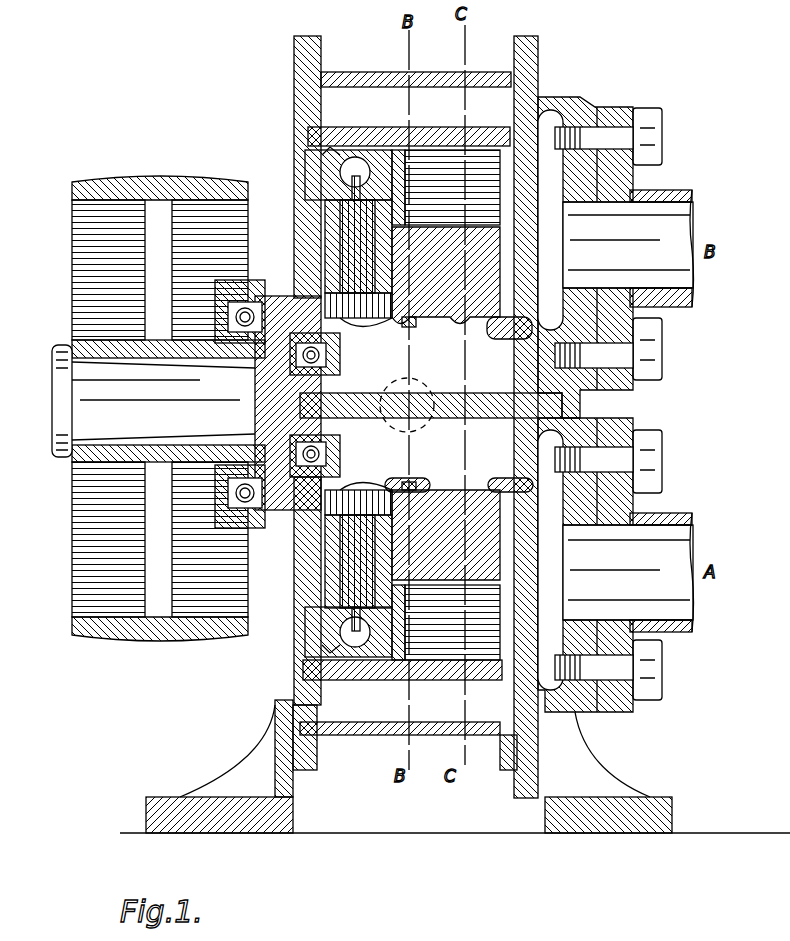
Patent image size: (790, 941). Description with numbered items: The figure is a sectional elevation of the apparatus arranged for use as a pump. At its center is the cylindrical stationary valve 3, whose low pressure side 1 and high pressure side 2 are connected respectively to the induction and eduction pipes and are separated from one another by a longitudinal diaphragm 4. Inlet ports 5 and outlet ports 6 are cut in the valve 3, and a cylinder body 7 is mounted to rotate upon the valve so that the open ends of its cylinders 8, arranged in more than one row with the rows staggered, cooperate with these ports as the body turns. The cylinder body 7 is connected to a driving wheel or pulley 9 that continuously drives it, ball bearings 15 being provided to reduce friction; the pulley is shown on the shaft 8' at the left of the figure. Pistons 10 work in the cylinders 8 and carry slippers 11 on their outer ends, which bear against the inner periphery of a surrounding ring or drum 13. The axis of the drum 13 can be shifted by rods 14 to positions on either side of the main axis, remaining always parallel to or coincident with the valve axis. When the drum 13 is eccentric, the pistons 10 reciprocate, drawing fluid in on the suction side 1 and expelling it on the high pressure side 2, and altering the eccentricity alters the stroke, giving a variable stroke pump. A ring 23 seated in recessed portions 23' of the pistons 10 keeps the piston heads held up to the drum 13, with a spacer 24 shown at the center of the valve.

The low pressure side 1 is at (486, 470).
The high pressure side 2 is at (545, 352).
The central cylindrical stationary valve 3 is at (500, 332).
The longitudinal diaphragm 4 is at (510, 395).
The inlet ports 5 is at (398, 482).
The outlet ports 6 is at (376, 322).
The cylinder body 7 is at (500, 256).
The cylinders 8 is at (358, 404).
The drive shaft 8' is at (169, 403).
The driving wheel or pulley 9 is at (72, 598).
The pistons 10 is at (330, 215).
The slippers 11 is at (390, 130).
The ring or drum 13 is at (445, 130).
The rods 14 is at (432, 390).
The ball bearings 15 is at (245, 300).
The ring 23 is at (320, 406).
The recessed portions 23' is at (291, 407).
The spacer 24 is at (410, 322).